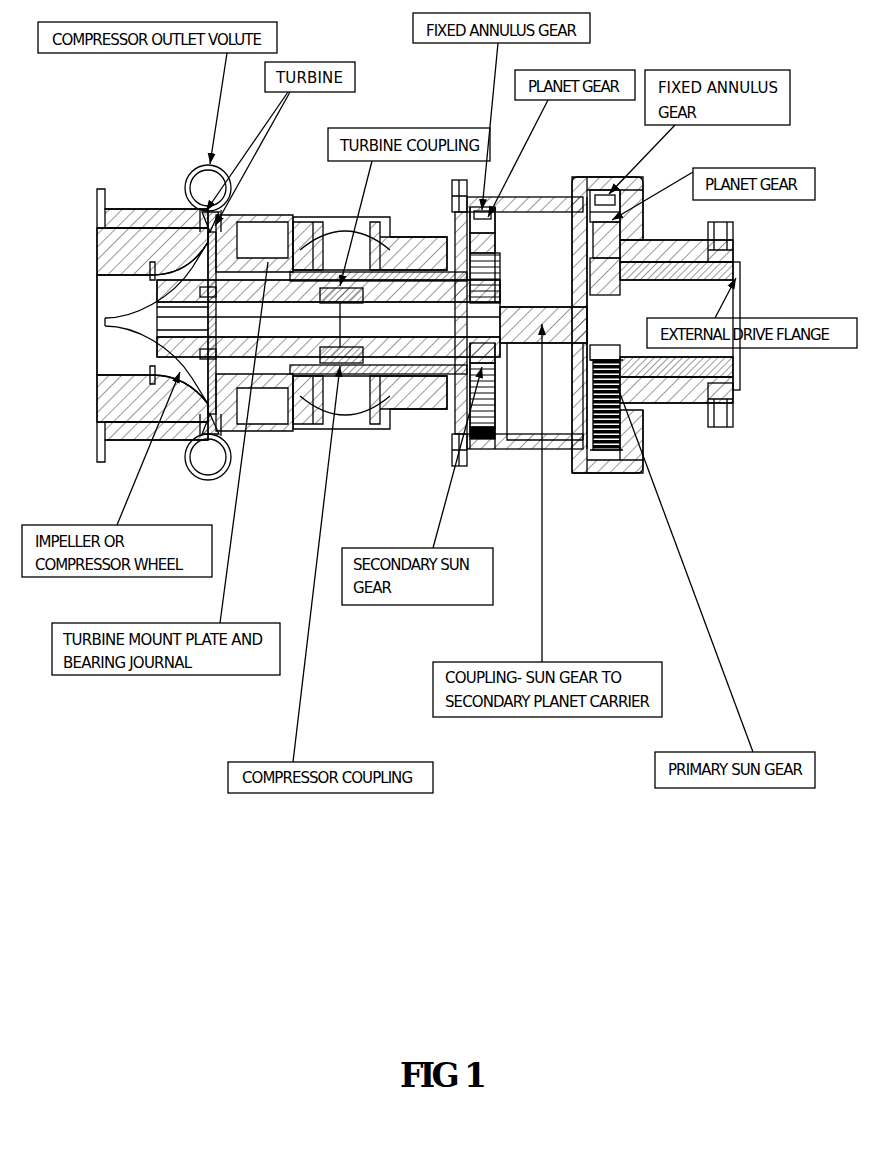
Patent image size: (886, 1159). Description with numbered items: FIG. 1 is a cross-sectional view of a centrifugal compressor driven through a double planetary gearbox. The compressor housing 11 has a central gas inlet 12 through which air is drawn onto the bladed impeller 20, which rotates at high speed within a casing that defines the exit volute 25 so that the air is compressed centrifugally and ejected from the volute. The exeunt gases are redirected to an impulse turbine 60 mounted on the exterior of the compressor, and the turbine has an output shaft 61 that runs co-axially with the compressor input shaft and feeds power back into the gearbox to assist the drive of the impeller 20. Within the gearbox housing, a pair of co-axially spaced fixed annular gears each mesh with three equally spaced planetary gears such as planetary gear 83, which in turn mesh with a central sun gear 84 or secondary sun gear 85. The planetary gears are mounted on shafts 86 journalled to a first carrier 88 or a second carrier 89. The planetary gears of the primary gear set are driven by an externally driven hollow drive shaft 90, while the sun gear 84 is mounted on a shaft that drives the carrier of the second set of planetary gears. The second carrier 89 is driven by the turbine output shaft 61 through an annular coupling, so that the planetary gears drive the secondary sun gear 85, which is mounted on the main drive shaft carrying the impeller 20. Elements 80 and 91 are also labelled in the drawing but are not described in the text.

The compressor housing 11 is at (145, 215).
The central gas inlet 12 is at (100, 272).
The bladed impeller 20 is at (155, 328).
The exit volute 25 is at (215, 185).
The impulse turbine 60 is at (215, 231).
The output shaft 61 is at (262, 280).
The fixed annulus gear 80 is at (577, 195).
The planetary gear 83 is at (540, 198).
The sun gear 84 is at (618, 297).
The secondary sun gear 85 is at (492, 372).
The shaft 86 is at (612, 250).
The first carrier 88 is at (543, 304).
The second carrier 89 is at (497, 272).
The hollow drive shaft 90 is at (740, 360).
The secondary planet carrier 91 is at (569, 303).